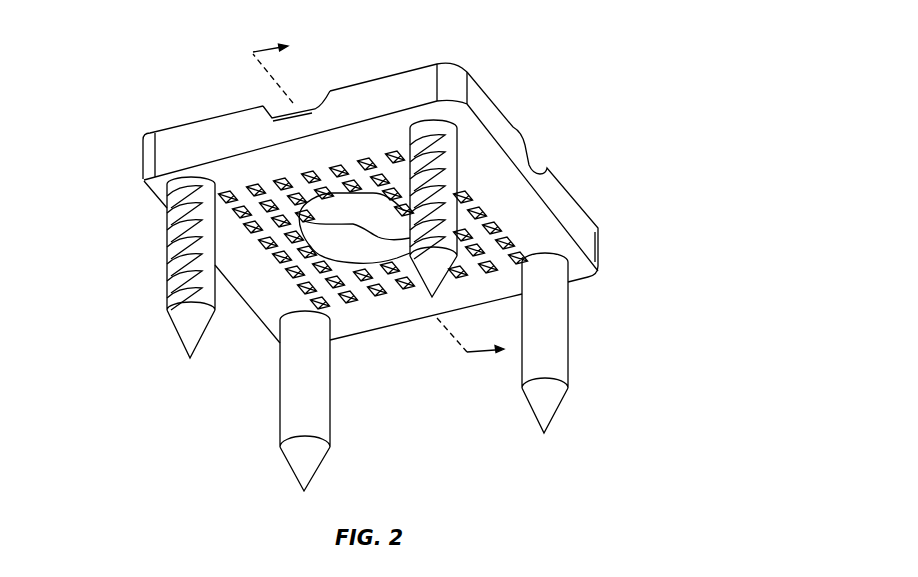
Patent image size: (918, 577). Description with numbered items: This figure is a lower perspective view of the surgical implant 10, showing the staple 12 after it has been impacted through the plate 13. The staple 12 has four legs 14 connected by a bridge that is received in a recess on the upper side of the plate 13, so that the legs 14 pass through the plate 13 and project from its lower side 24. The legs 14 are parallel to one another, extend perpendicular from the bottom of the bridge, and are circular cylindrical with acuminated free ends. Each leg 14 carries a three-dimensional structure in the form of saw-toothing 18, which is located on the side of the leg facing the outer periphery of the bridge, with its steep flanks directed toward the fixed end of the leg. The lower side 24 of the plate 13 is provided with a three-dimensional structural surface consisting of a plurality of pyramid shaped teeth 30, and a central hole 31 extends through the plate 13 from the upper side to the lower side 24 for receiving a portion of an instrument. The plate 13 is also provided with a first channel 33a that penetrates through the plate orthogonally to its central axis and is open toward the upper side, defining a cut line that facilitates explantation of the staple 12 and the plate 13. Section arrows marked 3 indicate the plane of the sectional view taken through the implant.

The surgical implant 10 is at (569, 62).
The staple 12 is at (168, 274).
The plate 13 is at (584, 219).
The legs 14 is at (280, 418).
The saw-toothing 18 is at (168, 215).
The lower side 24 is at (231, 165).
The pyramid shaped teeth 30 is at (282, 266).
The central hole 31 is at (338, 243).
The first channel 33a is at (317, 103).
The section line 3- 3 is at (387, 199).